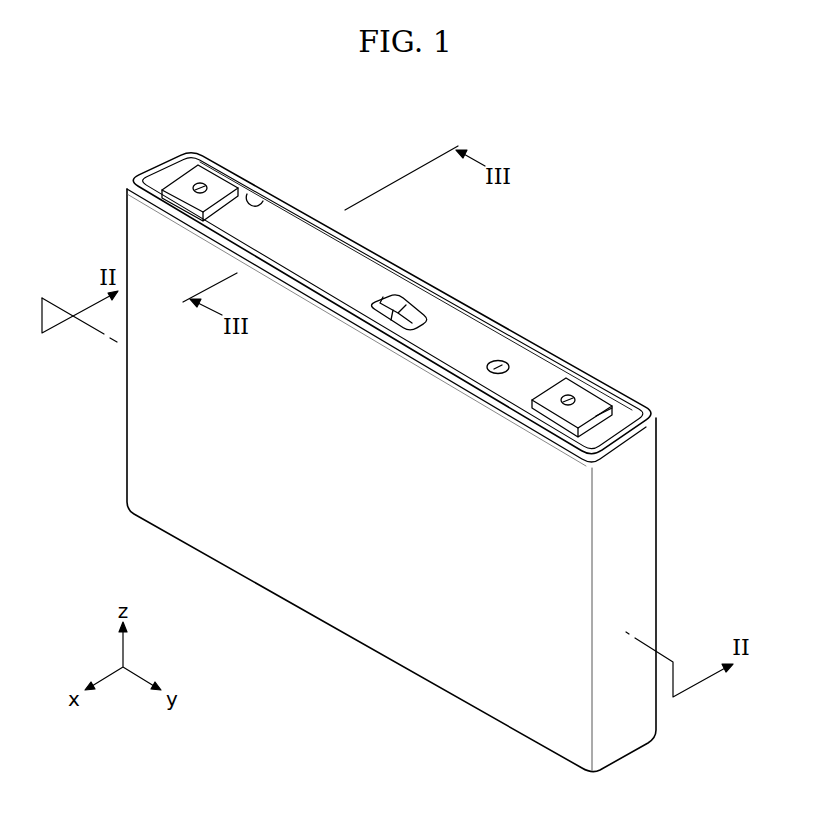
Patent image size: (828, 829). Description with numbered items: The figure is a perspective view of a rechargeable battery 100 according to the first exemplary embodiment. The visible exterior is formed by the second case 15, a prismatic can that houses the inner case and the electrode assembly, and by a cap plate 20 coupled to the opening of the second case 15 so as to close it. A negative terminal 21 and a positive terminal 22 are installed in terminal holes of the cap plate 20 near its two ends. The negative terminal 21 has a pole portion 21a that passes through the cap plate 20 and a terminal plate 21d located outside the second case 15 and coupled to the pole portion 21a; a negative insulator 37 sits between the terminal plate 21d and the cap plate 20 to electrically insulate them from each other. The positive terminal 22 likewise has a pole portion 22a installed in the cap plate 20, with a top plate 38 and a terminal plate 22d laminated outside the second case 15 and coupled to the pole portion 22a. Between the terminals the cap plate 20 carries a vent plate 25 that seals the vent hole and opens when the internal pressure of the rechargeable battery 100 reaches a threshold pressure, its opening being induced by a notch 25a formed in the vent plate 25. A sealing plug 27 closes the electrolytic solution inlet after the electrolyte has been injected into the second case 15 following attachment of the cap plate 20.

The rechargeable battery 100 is at (524, 284).
The second case 15 is at (322, 612).
The cap plate 20 is at (348, 261).
The negative terminal 21 is at (170, 158).
The pole portion 21a is at (195, 186).
The terminal plate 21d is at (180, 185).
The positive terminal 22 is at (628, 371).
The pole portion 22a is at (577, 400).
The terminal plate 22d is at (594, 401).
The vent plate 25 is at (439, 279).
The notch 25a is at (410, 312).
The sealing plug 27 is at (502, 361).
The negative insulator 37 is at (262, 204).
The top plate 38 is at (597, 417).